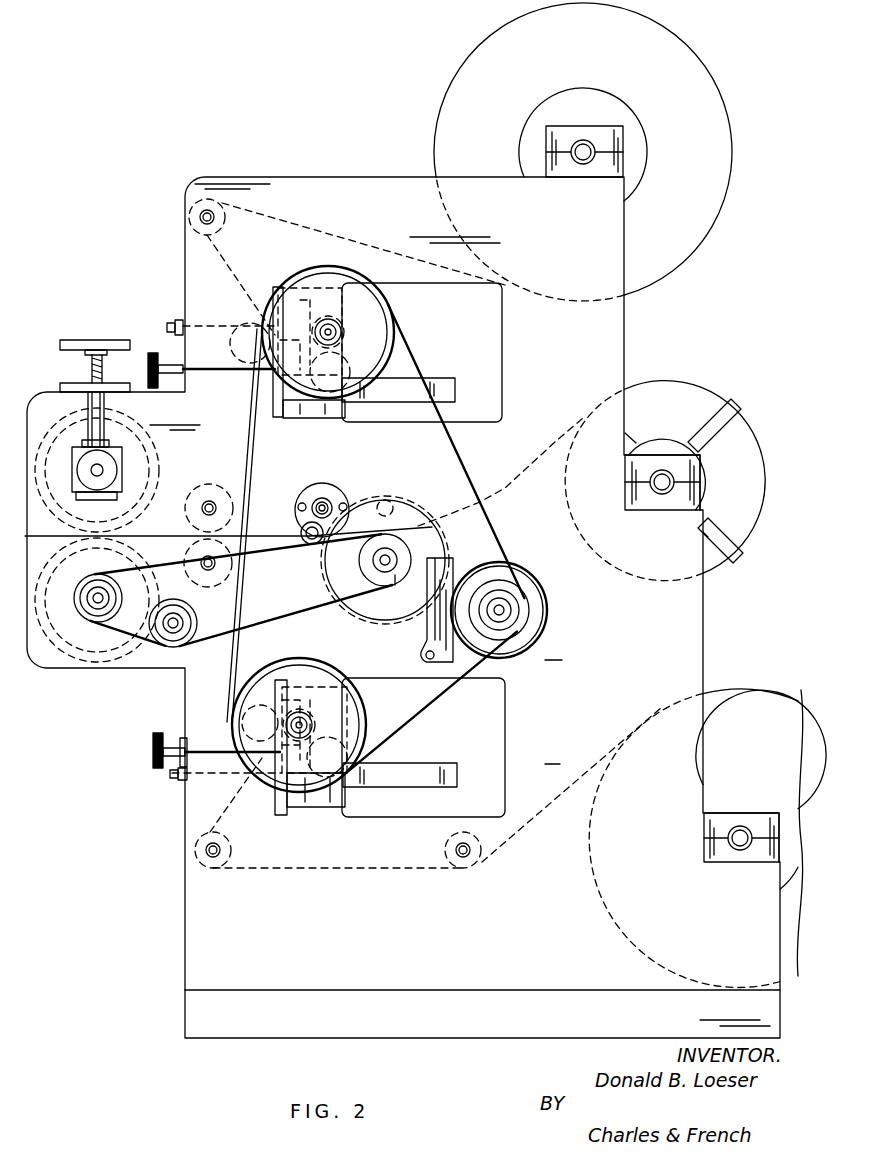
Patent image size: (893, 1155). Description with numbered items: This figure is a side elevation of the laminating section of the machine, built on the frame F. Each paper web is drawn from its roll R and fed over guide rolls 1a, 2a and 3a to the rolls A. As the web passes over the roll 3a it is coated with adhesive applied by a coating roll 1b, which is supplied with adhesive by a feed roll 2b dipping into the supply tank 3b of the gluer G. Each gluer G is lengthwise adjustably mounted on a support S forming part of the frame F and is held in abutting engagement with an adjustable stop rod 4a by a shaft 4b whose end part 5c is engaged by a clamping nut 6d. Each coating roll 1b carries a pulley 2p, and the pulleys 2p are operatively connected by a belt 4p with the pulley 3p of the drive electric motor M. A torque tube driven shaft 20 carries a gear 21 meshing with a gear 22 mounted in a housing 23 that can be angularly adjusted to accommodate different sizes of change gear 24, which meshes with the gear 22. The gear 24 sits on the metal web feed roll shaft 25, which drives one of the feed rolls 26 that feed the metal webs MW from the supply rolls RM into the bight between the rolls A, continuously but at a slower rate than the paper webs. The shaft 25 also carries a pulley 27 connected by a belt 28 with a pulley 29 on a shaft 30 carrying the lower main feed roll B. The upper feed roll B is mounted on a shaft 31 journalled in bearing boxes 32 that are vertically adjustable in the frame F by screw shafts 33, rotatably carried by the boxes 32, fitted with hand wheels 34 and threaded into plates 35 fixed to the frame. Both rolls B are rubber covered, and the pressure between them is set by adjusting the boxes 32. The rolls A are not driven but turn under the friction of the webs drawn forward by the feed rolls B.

The guide roll 1a is at (467, 866).
The coating roll 1b is at (318, 333).
The guide roll 2a is at (222, 212).
The feed roll 2b is at (340, 340).
The pulley 2p is at (364, 282).
The guide roll 3a is at (244, 346).
The supply tank 3b is at (428, 380).
The pulley 3p is at (514, 604).
The adjustable stop rod 4a is at (210, 322).
The shaft 4b is at (228, 373).
The belt 4p is at (468, 490).
The end part 5c is at (176, 345).
The clamping nut 6d is at (148, 370).
The torque tube driven shaft 20 is at (330, 500).
The gear 21 is at (322, 500).
The gear 22 is at (301, 530).
The housing 23 is at (306, 490).
The change gear 24 is at (426, 516).
The metal web feed roll shaft 25 is at (382, 566).
The feed roll 26 is at (400, 486).
The pulley 27 is at (398, 588).
The belt 28 is at (270, 626).
The pulley 29 is at (72, 590).
The shaft 30 is at (98, 606).
The shaft 31 is at (102, 472).
The bearing box 32 is at (118, 462).
The screw shaft 33 is at (88, 428).
The hand wheel 34 is at (100, 340).
The plate 35 is at (74, 383).
The roll A is at (214, 488).
The main feed roll B is at (160, 470).
The frame F is at (190, 892).
The gluer G is at (300, 417).
The support S is at (316, 418).
The drive electric motor M is at (548, 630).
The metal web MW is at (526, 474).
The roll R is at (727, 202).
The supply roll RM is at (706, 394).